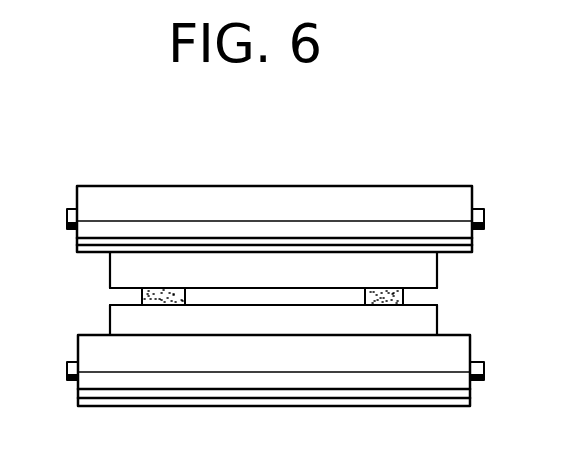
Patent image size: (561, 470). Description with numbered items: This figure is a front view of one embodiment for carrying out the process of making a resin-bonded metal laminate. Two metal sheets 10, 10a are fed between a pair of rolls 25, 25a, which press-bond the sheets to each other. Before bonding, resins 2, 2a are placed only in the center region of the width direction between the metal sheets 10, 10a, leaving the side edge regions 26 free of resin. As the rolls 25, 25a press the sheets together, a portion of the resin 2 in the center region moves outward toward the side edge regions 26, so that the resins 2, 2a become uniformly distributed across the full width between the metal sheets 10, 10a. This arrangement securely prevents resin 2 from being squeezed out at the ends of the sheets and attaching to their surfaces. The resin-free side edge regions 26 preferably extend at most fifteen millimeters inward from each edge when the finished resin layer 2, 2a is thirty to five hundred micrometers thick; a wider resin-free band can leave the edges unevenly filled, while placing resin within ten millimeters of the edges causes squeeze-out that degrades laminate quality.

The roll 25 is at (185, 193).
The roll 25a is at (413, 386).
The metal sheet 10 is at (285, 270).
The metal sheet 10a is at (245, 320).
The resin 2 is at (393, 287).
The resin 2a is at (317, 297).
The side edge region 26 is at (137, 295).